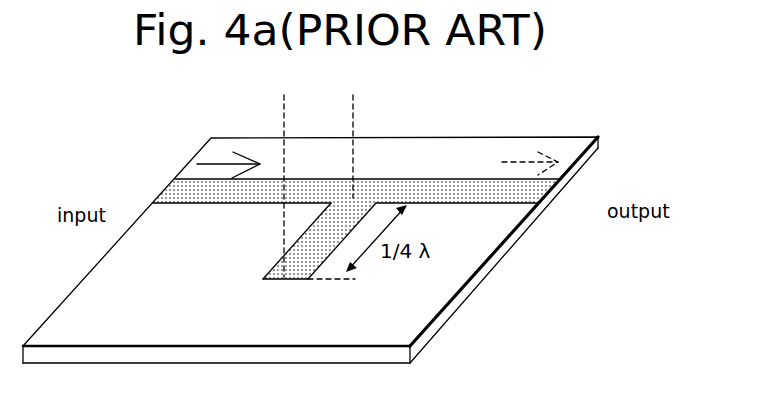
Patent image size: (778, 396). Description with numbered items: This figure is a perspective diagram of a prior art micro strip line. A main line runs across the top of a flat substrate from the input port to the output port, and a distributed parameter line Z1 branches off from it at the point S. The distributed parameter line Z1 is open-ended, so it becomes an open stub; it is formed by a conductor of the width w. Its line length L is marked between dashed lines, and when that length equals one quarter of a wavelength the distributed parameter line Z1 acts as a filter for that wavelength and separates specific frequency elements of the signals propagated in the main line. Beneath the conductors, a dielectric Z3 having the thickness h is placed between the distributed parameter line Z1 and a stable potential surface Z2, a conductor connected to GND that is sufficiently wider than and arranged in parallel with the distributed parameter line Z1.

The line length L is at (318, 177).
The branch point S is at (356, 199).
The width w is at (311, 294).
The distributed parameter line Z1 is at (330, 256).
The stable potential surface Z2 is at (477, 290).
The dielectric Z3 is at (507, 248).
The thickness h is at (310, 255).